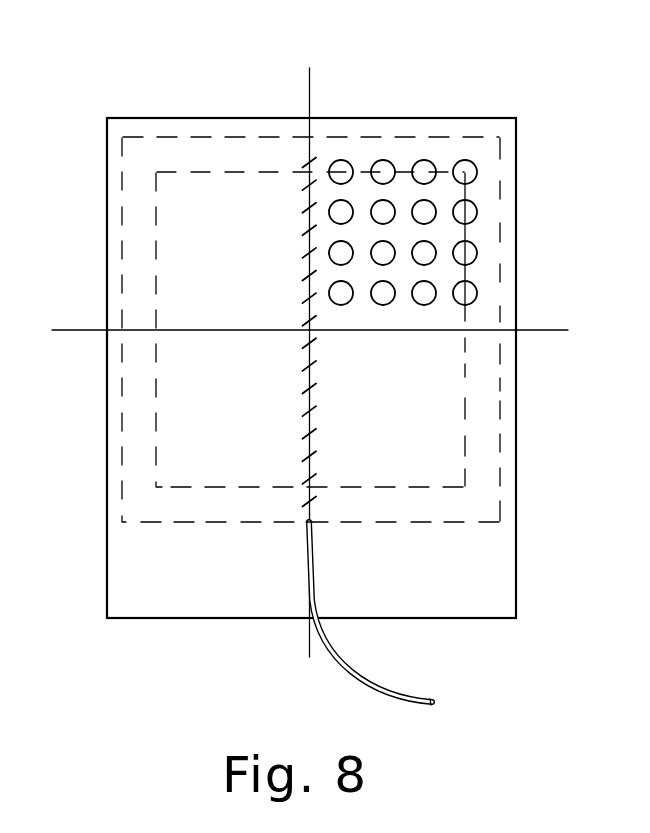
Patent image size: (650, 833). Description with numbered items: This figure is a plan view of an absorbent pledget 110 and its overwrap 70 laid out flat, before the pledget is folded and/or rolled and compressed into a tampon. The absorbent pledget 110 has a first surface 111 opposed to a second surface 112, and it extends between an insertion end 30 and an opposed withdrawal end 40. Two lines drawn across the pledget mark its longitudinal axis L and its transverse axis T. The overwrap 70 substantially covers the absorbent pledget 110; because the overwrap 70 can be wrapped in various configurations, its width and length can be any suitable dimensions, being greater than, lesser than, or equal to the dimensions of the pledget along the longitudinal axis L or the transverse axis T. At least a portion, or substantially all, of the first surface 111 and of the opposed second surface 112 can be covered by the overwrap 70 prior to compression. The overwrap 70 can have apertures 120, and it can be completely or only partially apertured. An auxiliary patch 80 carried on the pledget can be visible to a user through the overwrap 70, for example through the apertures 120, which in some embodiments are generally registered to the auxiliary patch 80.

The insertion end 30 is at (215, 158).
The withdrawal end 40 is at (140, 512).
The overwrap 70 is at (444, 135).
The auxiliary patch 80 is at (440, 318).
The absorbent pledget 110 is at (179, 205).
The first surface 111 is at (178, 452).
The second surface 112 is at (90, 272).
The apertures 120 is at (477, 169).
The longitudinal axis L is at (309, 93).
The transverse axis T is at (533, 332).